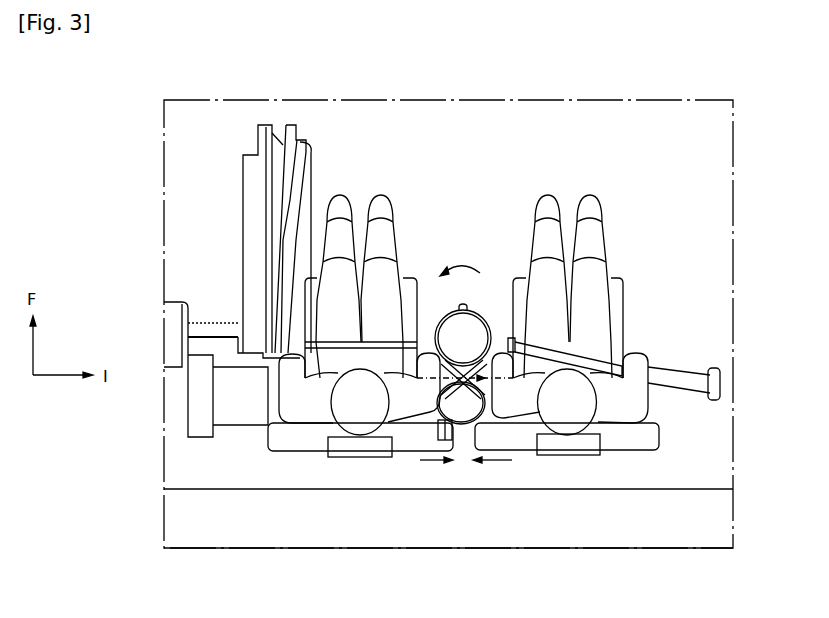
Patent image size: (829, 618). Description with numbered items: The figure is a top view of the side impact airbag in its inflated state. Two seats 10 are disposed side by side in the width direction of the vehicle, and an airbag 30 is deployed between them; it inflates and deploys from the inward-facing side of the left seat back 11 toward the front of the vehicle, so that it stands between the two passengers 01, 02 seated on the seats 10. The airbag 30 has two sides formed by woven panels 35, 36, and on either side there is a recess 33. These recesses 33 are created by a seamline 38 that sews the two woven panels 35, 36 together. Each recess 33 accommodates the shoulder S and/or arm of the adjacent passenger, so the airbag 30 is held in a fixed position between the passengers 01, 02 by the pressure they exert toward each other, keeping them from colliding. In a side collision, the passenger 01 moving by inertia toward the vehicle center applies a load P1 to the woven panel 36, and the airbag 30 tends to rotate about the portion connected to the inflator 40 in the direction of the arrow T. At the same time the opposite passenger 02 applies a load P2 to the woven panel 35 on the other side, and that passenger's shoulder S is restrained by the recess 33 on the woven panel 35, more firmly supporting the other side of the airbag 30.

The seat 10 is at (410, 437).
The seat back 11 is at (648, 505).
The airbag 30 is at (487, 306).
The recess 33 is at (513, 378).
The woven panel 35 is at (448, 312).
The woven panel 36 is at (470, 305).
The seamline 38 is at (415, 379).
The inflator 40 is at (444, 442).
The passenger 01 is at (571, 406).
The passenger 02 is at (360, 410).
The shoulder S is at (313, 400).
The load P1 is at (492, 471).
The load P2 is at (435, 471).
The rotation direction T is at (460, 259).